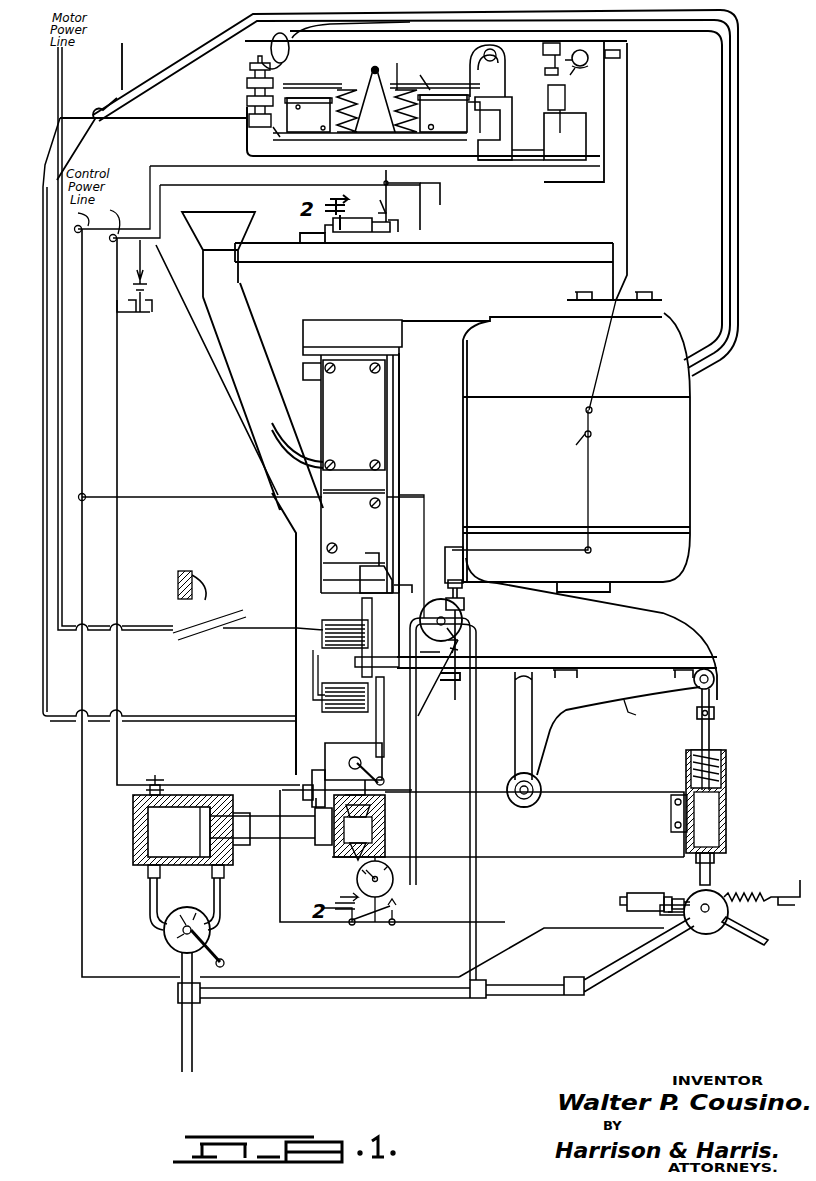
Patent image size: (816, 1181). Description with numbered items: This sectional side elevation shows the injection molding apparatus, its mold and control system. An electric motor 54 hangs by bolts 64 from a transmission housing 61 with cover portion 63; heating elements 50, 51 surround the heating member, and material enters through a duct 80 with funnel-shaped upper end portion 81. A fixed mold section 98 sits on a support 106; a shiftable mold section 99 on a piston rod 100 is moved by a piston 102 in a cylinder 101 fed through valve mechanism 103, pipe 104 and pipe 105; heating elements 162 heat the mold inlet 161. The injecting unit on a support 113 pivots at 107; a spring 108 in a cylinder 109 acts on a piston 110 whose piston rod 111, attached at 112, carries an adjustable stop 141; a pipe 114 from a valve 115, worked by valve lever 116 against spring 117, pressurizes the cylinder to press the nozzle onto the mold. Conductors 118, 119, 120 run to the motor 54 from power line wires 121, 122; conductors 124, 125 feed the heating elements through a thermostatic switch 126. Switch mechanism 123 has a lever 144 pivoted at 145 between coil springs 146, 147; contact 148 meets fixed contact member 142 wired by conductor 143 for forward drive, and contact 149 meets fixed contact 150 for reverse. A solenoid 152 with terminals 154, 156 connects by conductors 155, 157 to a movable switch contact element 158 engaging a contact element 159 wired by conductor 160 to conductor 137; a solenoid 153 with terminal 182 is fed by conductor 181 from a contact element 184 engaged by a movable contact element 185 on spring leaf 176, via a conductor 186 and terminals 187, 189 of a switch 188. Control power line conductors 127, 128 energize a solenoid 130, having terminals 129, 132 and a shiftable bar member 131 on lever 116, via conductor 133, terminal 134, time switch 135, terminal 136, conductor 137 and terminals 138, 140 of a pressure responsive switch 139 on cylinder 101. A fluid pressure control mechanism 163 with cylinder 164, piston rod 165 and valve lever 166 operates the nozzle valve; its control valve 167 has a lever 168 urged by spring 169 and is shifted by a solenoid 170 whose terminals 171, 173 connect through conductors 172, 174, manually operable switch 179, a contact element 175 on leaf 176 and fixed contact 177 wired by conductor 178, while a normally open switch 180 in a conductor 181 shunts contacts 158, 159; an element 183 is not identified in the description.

The heating element 50 is at (324, 632).
The heating element 51 is at (322, 695).
The electric motor 54 is at (693, 412).
The transmission housing 61 is at (530, 268).
The cover portion 63 is at (530, 245).
The bolts 64 is at (645, 292).
The duct 80 is at (222, 326).
The funnel-shaped upper end portion 81 is at (195, 240).
The fixed mold section 98 is at (386, 850).
The shiftable mold section 99 is at (348, 884).
The piston rod 100 is at (262, 840).
The cylinder 101 is at (226, 800).
The piston 102 is at (202, 828).
The valve mechanism 103 is at (212, 940).
The pipe 104 is at (178, 986).
The pipe 105 is at (148, 905).
The support 106 is at (540, 857).
The pivot 107 is at (545, 785).
The spring 108 is at (722, 760).
The cylinder 109 is at (722, 777).
The piston 110 is at (727, 805).
The piston rod 111 is at (710, 730).
The pivotal attachment 112 is at (716, 676).
The support 113 is at (618, 731).
The pipe 114 is at (712, 868).
The valve 115 is at (716, 890).
The valve lever 116 is at (690, 935).
The spring 117 is at (762, 893).
The right hand conductor 118 is at (740, 205).
The middle conductor 119 is at (731, 187).
The left conductor 120 is at (722, 160).
The wire of the power line 121 is at (124, 53).
The wire of the power line 122 is at (63, 85).
The switch mechanism 123 is at (377, 66).
The conductor 124 is at (46, 366).
The conductor 125 is at (61, 392).
The thermostatic switch 126 is at (214, 593).
The conductor 127 is at (83, 683).
The conductor 128 is at (118, 552).
The terminal 129 is at (656, 898).
The solenoid 130 is at (634, 892).
The shiftable bar member 131 is at (443, 196).
The terminal 132 is at (627, 901).
The conductor 133 is at (508, 928).
The terminal 134 is at (393, 925).
The time switch 135 is at (317, 909).
The terminal 136 is at (352, 925).
The conductor 137 is at (284, 922).
The terminal 138 is at (162, 785).
The pressure responsive switch 139 is at (170, 792).
The terminal 140 is at (155, 775).
The adjustable stop 141 is at (715, 710).
The fixed contact member 142 is at (247, 104).
The conductor 143 is at (153, 120).
The pivotally mounted lever 144 is at (422, 72).
The pivot 145 is at (416, 58).
The coil spring 146 is at (420, 90).
The coil spring 147 is at (352, 90).
The contact 148 is at (248, 88).
The contact 149 is at (493, 128).
The fixed contact 150 is at (511, 155).
The solenoid 152 is at (307, 110).
The solenoid 153 is at (456, 98).
The terminal 154 is at (350, 44).
The conductor 155 is at (188, 166).
The terminal 156 is at (273, 40).
The conductor 157 is at (212, 185).
The movable switch contact element 158 is at (318, 770).
The contact element 159 is at (305, 788).
The conductor 160 is at (320, 845).
The inlet 161 is at (370, 796).
The heating elements 162 is at (380, 820).
The fluid pressure control mechanism 163 is at (405, 585).
The cylinder 164 is at (372, 566).
The piston rod 165 is at (386, 722).
The valve lever 166 is at (370, 772).
The fluid medium control valve 167 is at (462, 614).
The valve lever 168 is at (433, 690).
The spring 169 is at (460, 636).
The solenoid 170 is at (464, 550).
The terminal 171 is at (466, 600).
The conductor 172 is at (418, 495).
The terminal 173 is at (470, 574).
The conductor 174 is at (589, 488).
The contact element 175 is at (549, 56).
The yieldable spring leaf 176 is at (493, 67).
The contact 177 is at (545, 140).
The conductor 178 is at (392, 170).
The manually operable switch 179 is at (594, 420).
The operable switch 180 is at (133, 276).
The conductor 181 is at (124, 312).
The terminal 182 is at (443, 113).
The terminal 183 is at (611, 48).
The contact element 184 is at (566, 95).
The movable contact element 185 is at (592, 57).
The conductor 186 is at (610, 118).
The terminal 187 is at (405, 210).
The switch 188 is at (382, 240).
The terminal 189 is at (386, 212).